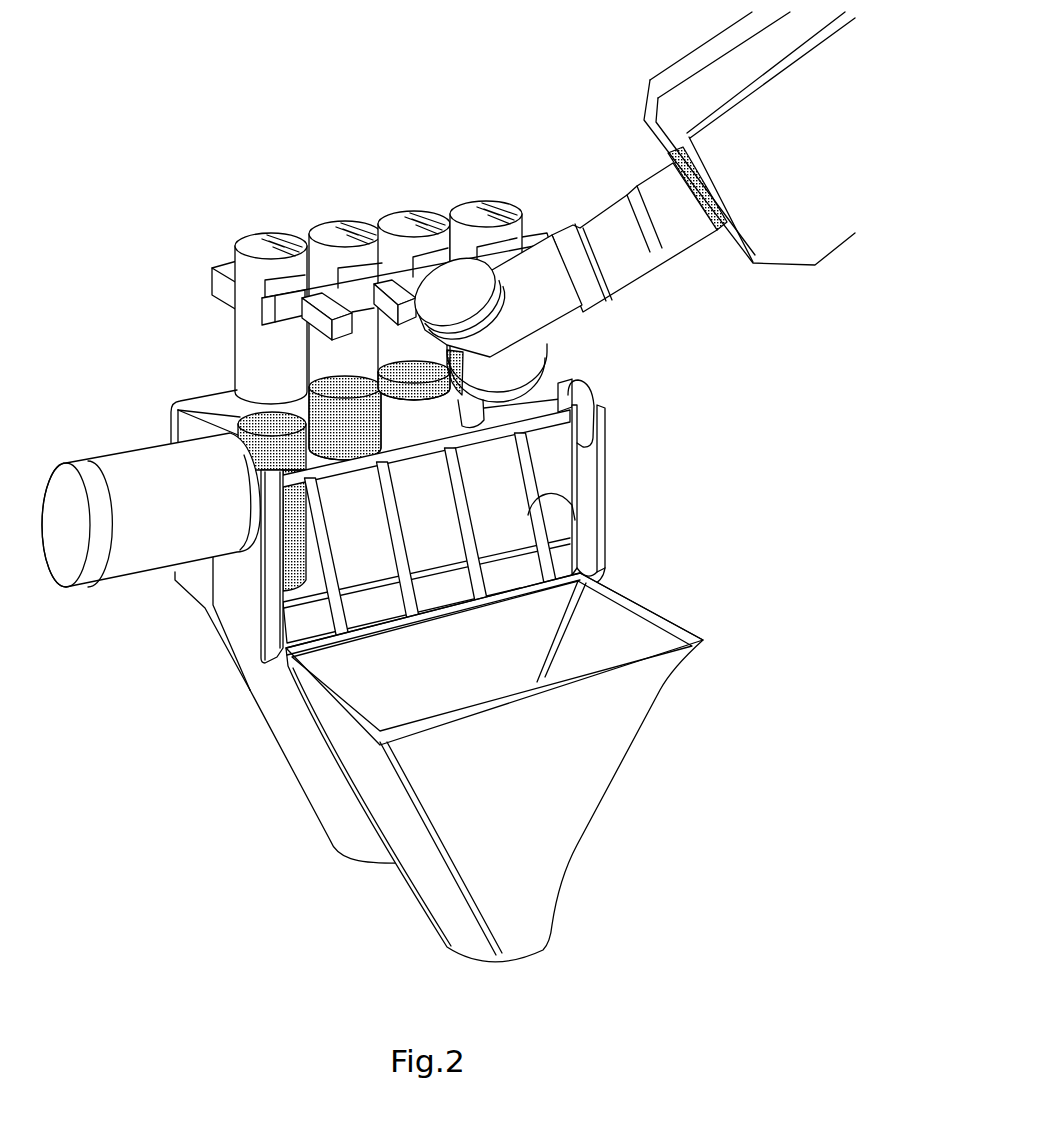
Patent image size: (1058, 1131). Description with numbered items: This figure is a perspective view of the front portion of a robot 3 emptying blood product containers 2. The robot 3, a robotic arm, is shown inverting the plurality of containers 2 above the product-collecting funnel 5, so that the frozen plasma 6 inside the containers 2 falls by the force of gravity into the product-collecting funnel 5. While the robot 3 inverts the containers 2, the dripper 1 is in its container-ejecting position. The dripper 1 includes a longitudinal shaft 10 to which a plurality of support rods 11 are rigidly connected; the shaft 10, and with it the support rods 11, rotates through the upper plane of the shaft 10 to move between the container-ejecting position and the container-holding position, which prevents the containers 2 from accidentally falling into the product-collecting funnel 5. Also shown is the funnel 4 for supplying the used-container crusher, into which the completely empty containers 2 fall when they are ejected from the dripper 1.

The dripper 1 is at (123, 562).
The containers 2 is at (405, 214).
The robot 3 is at (612, 218).
The funnel for supplying the used-container crusher 4 is at (397, 832).
The product-collecting funnel 5 is at (222, 395).
The frozen plasma 6 is at (170, 410).
The longitudinal shaft 10 is at (483, 420).
The support rods 11 is at (540, 480).